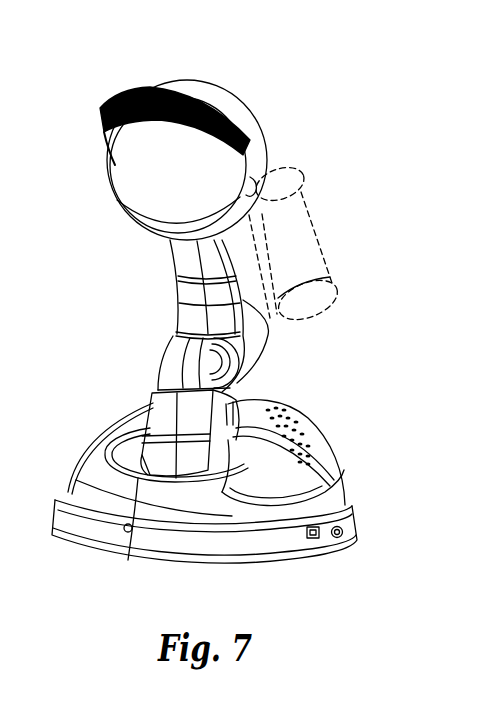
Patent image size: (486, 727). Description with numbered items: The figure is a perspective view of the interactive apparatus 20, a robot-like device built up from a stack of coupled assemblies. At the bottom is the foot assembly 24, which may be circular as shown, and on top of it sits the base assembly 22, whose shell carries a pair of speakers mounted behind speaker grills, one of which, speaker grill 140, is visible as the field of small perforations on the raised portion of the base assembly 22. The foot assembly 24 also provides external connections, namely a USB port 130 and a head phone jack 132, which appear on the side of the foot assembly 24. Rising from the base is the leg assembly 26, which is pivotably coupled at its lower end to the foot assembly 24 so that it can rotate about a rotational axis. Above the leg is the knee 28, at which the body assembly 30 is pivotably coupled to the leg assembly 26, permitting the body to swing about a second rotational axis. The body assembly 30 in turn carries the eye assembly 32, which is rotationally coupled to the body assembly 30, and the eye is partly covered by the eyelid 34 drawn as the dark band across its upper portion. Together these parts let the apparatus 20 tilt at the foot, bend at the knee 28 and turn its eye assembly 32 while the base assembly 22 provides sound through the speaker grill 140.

The interactive apparatus 20 is at (302, 50).
The base assembly 22 is at (338, 497).
The foot assembly 24 is at (62, 510).
The leg assembly 26 is at (154, 394).
The knee 28 is at (172, 360).
The body assembly 30 is at (192, 297).
The eye assembly 32 is at (142, 180).
The eyelid 34 is at (232, 103).
The USB port 130 is at (315, 542).
The head phone jack 132 is at (343, 540).
The speaker grill 140 is at (310, 436).